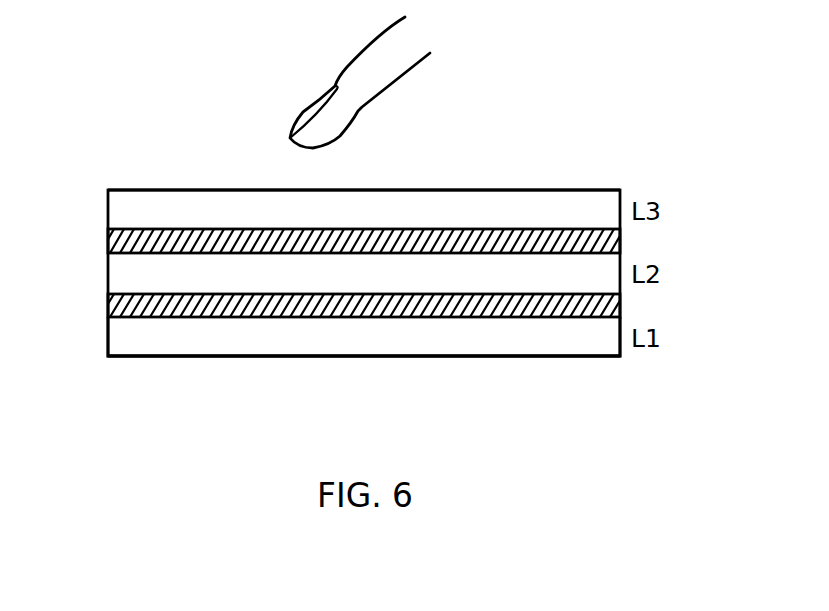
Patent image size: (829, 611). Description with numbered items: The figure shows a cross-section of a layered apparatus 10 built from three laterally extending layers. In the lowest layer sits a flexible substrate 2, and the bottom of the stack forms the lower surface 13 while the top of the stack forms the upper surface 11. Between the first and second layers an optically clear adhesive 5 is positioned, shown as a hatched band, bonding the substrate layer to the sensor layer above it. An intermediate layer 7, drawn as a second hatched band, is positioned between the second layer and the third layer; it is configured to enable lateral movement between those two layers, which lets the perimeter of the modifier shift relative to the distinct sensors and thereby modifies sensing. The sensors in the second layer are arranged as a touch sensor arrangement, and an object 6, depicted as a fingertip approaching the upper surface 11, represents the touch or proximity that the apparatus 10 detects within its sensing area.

The apparatus 10 is at (655, 158).
The upper surface 11 is at (413, 189).
The lower surface 13 is at (364, 357).
The intermediate layer 7 is at (108, 240).
The optically clear adhesive 5 is at (108, 305).
The flexible substrate 2 is at (106, 337).
The object 6 is at (323, 96).